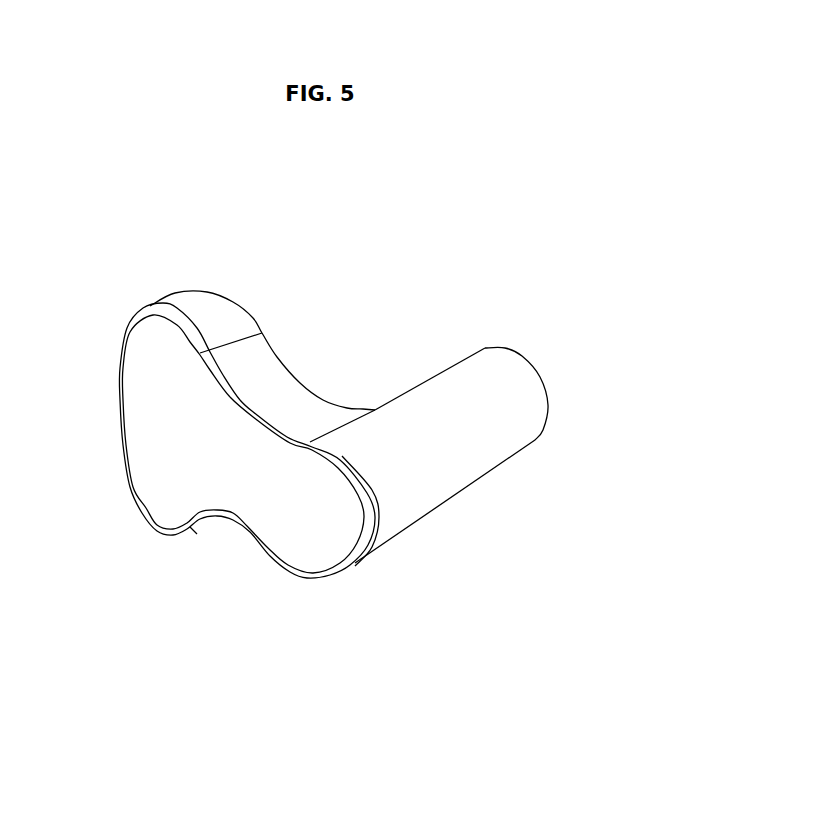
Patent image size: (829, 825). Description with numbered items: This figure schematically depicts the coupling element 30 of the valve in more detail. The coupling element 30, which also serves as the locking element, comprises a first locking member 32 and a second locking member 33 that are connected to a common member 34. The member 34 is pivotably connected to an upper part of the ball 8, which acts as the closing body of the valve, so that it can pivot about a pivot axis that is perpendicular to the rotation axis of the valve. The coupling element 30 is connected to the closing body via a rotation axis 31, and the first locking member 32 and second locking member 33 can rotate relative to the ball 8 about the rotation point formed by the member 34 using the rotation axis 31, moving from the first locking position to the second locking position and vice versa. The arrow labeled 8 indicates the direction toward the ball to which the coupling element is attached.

The coupling element 30 is at (325, 424).
The rotation axis 31 is at (460, 440).
The first locking member 32 is at (165, 342).
The second locking member 33 is at (155, 492).
The common member 34 is at (318, 520).
The ball 8 is at (545, 367).